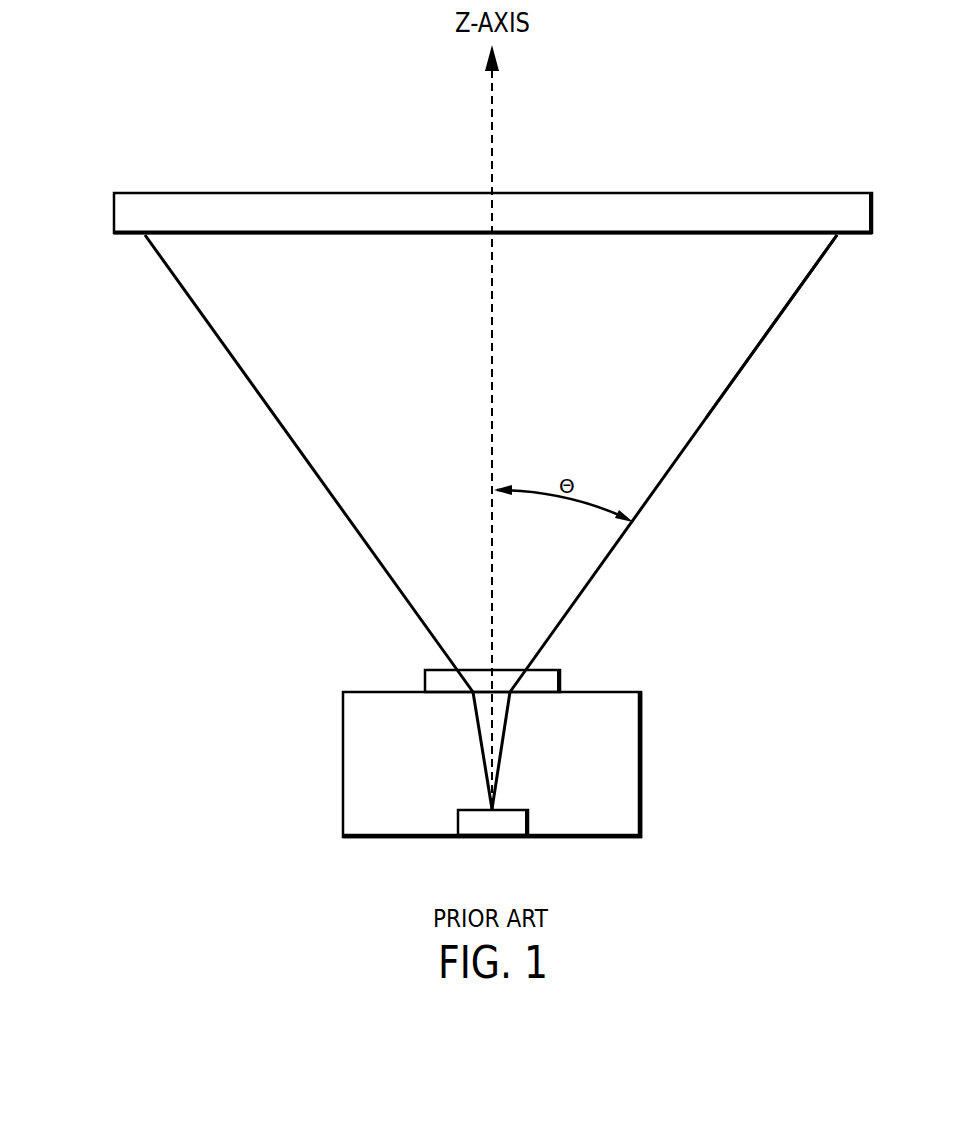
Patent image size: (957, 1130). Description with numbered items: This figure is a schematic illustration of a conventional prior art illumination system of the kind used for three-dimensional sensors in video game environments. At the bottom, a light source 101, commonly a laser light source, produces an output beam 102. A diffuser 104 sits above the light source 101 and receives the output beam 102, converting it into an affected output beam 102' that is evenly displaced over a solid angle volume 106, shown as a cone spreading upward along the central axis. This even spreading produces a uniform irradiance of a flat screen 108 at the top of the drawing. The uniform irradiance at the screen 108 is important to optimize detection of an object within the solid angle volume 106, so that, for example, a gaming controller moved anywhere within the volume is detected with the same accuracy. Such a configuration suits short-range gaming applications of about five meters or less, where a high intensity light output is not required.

The light source 101 is at (343, 764).
The output beam 102 is at (470, 763).
The affected output beam 102' is at (771, 346).
The diffuser 104 is at (425, 687).
The solid angle volume 106 is at (399, 352).
The flat screen 108 is at (114, 213).